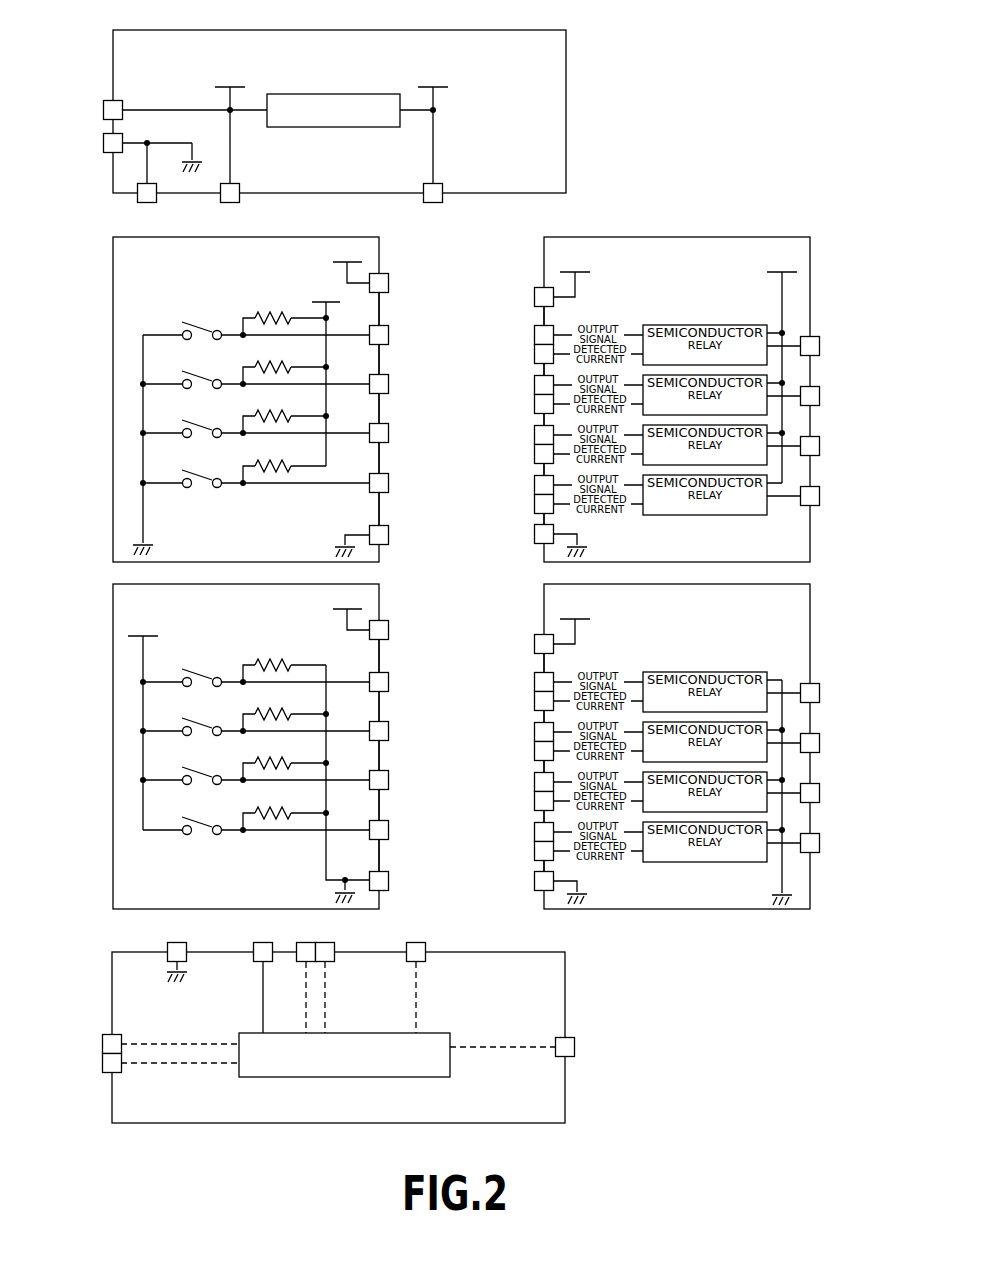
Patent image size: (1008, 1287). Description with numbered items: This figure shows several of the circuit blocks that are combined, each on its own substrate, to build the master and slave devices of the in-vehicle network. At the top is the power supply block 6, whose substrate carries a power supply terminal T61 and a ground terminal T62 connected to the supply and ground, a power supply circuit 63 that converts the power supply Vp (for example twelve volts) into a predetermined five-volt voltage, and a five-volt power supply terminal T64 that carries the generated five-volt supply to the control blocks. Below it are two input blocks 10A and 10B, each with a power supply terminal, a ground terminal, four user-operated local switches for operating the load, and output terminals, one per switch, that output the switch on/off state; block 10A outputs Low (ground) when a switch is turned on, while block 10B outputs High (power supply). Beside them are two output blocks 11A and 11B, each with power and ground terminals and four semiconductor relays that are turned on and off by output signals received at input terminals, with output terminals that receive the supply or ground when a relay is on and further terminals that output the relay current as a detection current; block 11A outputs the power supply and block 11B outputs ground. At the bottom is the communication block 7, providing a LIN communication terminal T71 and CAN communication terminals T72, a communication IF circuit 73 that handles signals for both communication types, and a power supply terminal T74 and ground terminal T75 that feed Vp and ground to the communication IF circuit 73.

The power supply block 6 is at (333, 126).
The power supply circuit 63 is at (335, 94).
The power supply terminal T61 is at (252, 215).
The ground terminal T62 is at (147, 203).
The 5V power supply terminal T64 is at (433, 203).
The input block 10A is at (246, 396).
The input block 10B is at (246, 743).
The output block 11A is at (676, 397).
The output block 11B is at (676, 744).
The communication block 7 is at (340, 1020).
The communication IF circuit 73 is at (383, 1077).
The LIN communication terminal T71 is at (416, 942).
The CAN communication terminal T72 is at (306, 942).
The power supply terminal T74 is at (263, 942).
The ground terminal T75 is at (177, 942).